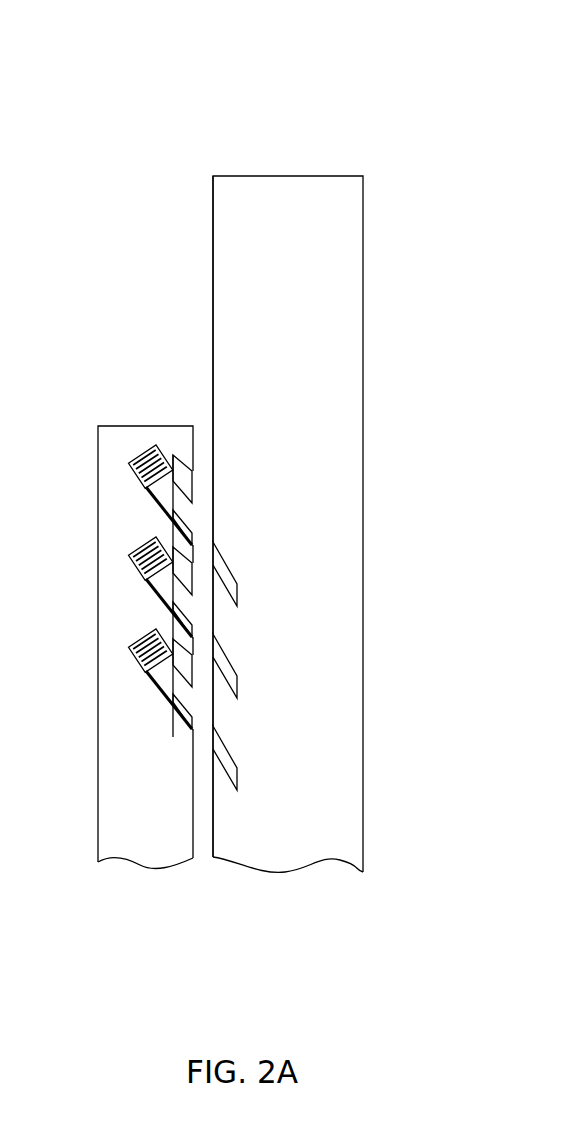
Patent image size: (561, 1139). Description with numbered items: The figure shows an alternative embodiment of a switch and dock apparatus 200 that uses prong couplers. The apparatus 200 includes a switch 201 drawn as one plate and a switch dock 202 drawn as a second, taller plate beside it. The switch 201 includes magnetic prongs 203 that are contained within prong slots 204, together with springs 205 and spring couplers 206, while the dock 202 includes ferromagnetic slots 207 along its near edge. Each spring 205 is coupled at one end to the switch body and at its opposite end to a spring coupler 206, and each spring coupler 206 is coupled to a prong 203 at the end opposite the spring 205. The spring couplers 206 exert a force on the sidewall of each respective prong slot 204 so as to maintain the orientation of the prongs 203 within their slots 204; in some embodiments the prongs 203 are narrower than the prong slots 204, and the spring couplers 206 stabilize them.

The apparatus 200 is at (126, 70).
The switch 201 is at (172, 833).
The switch dock 202 is at (320, 833).
The magnetic prongs 203 is at (193, 532).
The prong slots 204 is at (183, 738).
The springs 205 is at (134, 468).
The spring couplers 206 is at (176, 462).
The ferromagnetic slots 207 is at (238, 592).